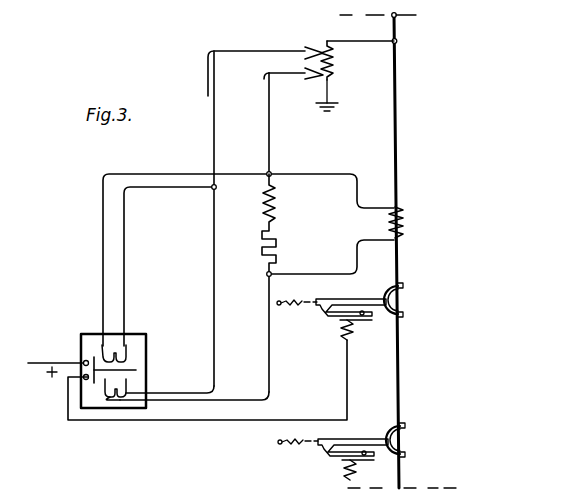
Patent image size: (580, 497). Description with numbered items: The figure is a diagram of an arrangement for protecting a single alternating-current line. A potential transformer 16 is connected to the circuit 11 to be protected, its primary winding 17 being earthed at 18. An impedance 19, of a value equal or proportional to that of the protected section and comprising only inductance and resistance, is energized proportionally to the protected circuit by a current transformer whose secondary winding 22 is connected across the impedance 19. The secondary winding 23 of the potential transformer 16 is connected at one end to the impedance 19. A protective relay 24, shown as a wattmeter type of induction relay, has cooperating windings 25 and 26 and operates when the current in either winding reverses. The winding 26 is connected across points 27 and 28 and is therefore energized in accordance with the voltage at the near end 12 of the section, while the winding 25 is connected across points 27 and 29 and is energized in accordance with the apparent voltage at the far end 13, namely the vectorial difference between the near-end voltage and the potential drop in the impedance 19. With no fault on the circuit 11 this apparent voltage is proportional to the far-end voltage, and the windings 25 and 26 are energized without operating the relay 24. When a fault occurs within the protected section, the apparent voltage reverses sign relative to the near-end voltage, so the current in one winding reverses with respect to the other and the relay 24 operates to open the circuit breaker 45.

The circuit 11 is at (398, 160).
The near end 12 is at (390, 16).
The far end 13 is at (415, 487).
The potential transformer 16 is at (347, 69).
The primary winding 17 is at (332, 67).
The earth 18 is at (336, 107).
The impedance 19 is at (276, 200).
The secondary winding 22 is at (392, 218).
The secondary winding 23 is at (307, 63).
The protective relay 24 is at (102, 371).
The winding 25 is at (120, 390).
The winding 26 is at (127, 350).
The point 27 is at (213, 189).
The point 28 is at (270, 172).
The point 29 is at (267, 276).
The circuit breaker 45 is at (404, 292).